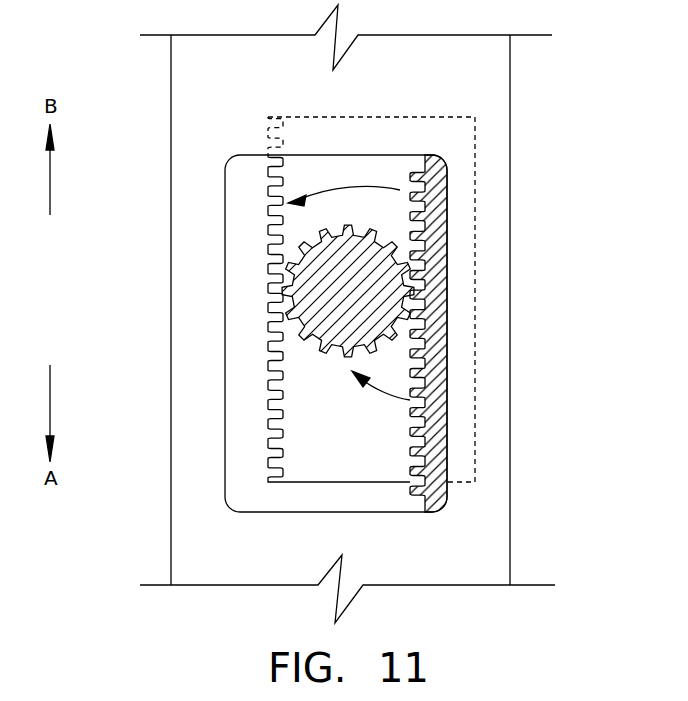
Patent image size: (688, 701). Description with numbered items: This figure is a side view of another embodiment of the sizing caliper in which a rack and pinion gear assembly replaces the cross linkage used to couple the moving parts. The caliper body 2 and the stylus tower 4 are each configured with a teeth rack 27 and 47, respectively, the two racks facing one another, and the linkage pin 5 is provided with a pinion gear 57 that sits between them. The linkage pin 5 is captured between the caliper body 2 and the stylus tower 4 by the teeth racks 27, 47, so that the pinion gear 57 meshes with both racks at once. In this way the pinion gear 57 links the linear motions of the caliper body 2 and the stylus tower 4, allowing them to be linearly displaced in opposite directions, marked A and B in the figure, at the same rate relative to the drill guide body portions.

The caliper body 2 is at (443, 545).
The stylus tower 4 is at (250, 197).
The linkage pin 5 is at (287, 297).
The teeth rack 27 is at (407, 450).
The teeth rack 47 is at (400, 190).
The pinion gear 57 is at (410, 400).